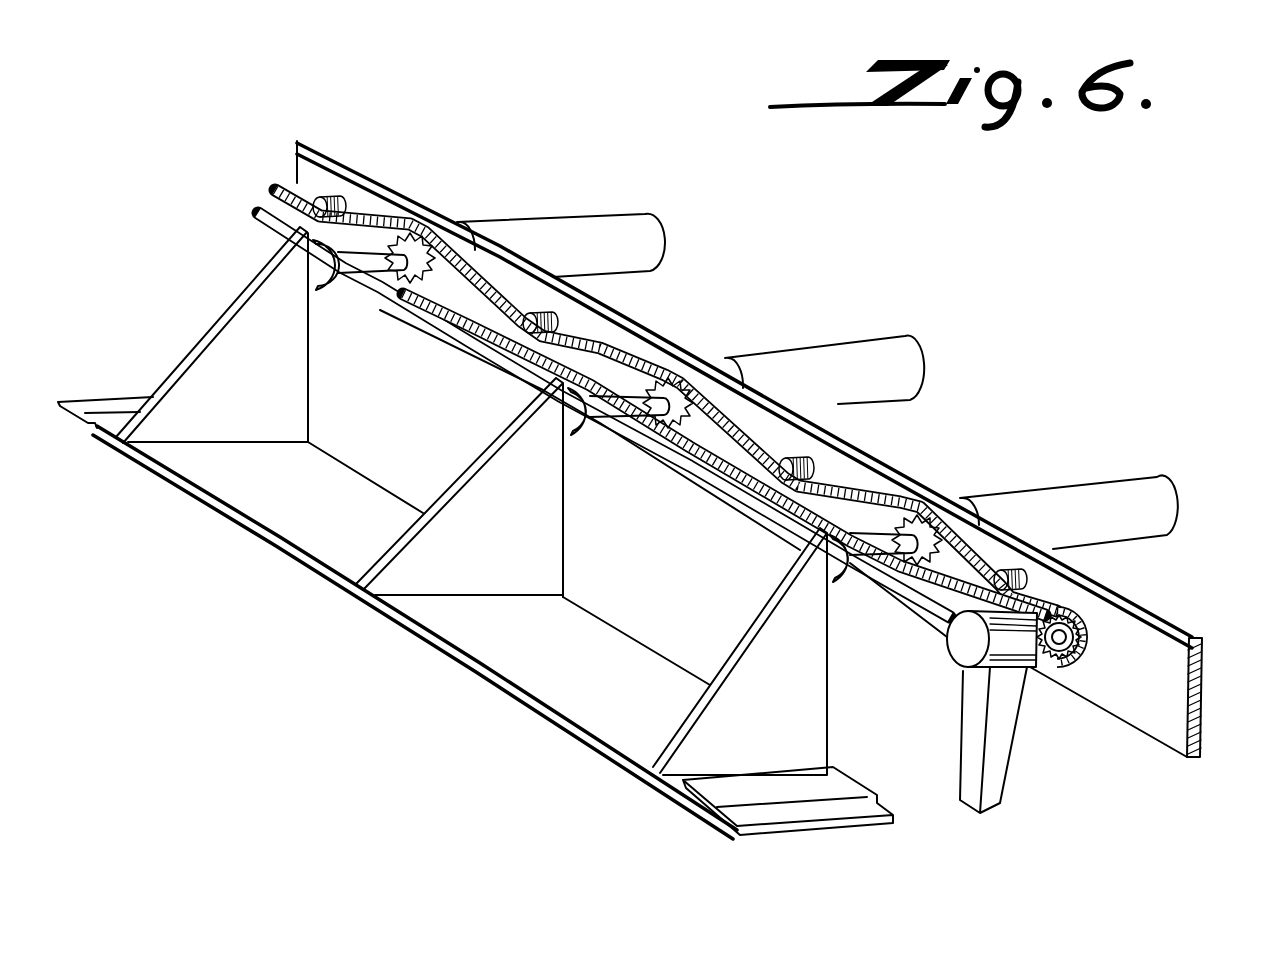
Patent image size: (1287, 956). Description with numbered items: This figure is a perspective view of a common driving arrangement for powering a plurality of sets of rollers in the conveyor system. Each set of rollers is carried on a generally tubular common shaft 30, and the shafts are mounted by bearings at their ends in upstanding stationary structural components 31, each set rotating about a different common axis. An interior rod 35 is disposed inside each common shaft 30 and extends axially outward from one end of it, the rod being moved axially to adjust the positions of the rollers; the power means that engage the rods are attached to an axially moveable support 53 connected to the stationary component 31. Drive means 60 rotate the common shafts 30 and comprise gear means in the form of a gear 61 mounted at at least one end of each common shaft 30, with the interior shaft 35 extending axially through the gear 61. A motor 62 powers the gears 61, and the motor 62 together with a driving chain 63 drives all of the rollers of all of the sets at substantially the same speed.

The common shaft 30 is at (780, 363).
The stationary structural component 31 is at (1172, 645).
The interior rod 35 is at (345, 265).
The moveable support 53 is at (420, 575).
The drive means 60 is at (1046, 708).
The gear 61 is at (400, 290).
The motor 62 is at (955, 658).
The driving chain 63 is at (1065, 603).